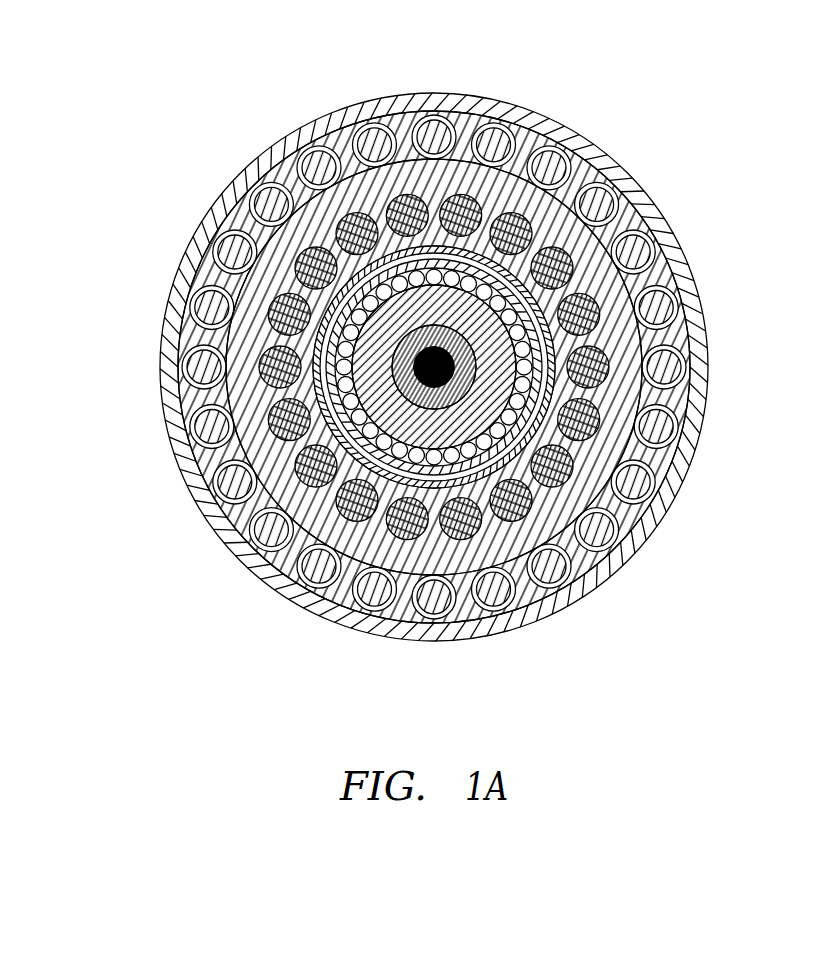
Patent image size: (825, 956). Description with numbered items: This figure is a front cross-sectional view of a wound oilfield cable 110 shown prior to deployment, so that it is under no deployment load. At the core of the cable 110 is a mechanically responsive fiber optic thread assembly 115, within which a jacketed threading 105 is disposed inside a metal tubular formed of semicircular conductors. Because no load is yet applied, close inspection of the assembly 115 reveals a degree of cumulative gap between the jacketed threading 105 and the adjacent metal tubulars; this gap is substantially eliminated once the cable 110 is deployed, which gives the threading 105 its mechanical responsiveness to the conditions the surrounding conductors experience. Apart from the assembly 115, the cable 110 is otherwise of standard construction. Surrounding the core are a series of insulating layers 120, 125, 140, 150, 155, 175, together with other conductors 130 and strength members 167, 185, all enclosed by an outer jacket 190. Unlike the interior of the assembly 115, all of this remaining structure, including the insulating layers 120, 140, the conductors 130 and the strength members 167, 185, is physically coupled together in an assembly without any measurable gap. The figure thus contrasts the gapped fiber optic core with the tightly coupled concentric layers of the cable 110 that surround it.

The jacketed threading 105 is at (437, 385).
The cable 110 is at (218, 103).
The mechanically responsive fiber optic thread assembly 115 is at (492, 312).
The insulating layer 120 is at (545, 320).
The insulating layer 125 is at (555, 350).
The conductors 130 is at (565, 380).
The insulating layer 140 is at (560, 372).
The insulating layer 150 is at (565, 410).
The insulating layer 155 is at (590, 415).
The strength members 167 is at (598, 433).
The insulating layer 175 is at (618, 460).
The strength members 185 is at (650, 495).
The outer jacket 190 is at (648, 532).